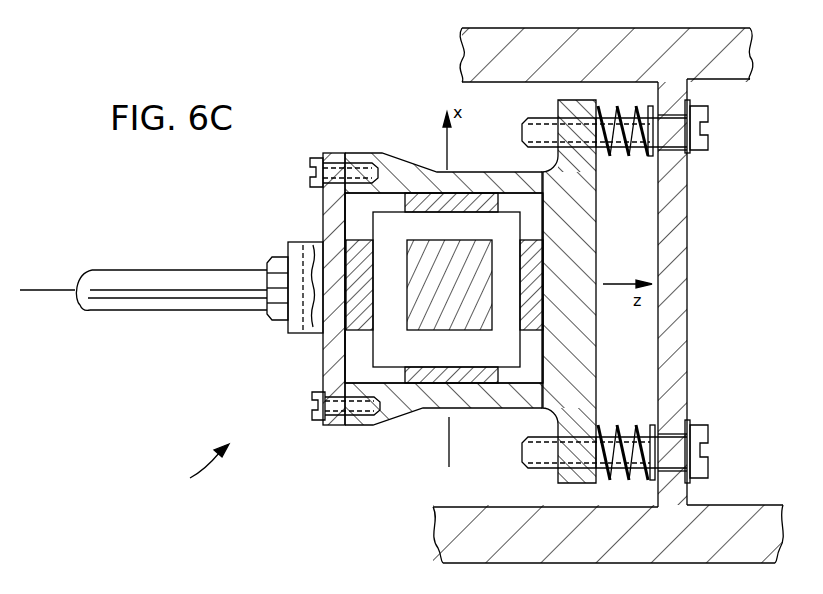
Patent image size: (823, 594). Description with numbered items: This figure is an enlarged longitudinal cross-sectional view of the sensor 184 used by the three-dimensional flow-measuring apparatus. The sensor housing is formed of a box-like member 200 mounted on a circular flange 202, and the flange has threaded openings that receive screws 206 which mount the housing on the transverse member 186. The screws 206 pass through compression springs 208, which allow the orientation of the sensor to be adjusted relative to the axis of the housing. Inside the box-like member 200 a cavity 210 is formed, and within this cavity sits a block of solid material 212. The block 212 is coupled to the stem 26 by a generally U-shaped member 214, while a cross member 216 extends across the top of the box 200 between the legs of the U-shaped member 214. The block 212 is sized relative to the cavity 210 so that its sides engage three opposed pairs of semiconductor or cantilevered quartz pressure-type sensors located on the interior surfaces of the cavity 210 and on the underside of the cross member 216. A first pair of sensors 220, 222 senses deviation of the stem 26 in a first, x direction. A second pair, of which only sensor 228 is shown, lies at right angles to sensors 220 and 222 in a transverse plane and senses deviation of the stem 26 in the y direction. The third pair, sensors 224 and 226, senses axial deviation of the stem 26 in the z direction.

The stem 26 is at (103, 306).
The sensor 184 is at (197, 475).
The transverse member 186 is at (678, 371).
The box-like member 200 is at (508, 410).
The circular flange 202 is at (588, 350).
The screw 206 is at (710, 108).
The compression spring 208 is at (640, 156).
The cavity 210 is at (391, 205).
The block of solid material 212 is at (383, 343).
The U-shaped member 214 is at (293, 256).
The cross member 216 is at (328, 216).
The sensor 220 is at (433, 381).
The sensor 222 is at (472, 203).
The sensor 224 is at (528, 258).
The sensor 226 is at (368, 312).
The sensor 228 is at (478, 322).